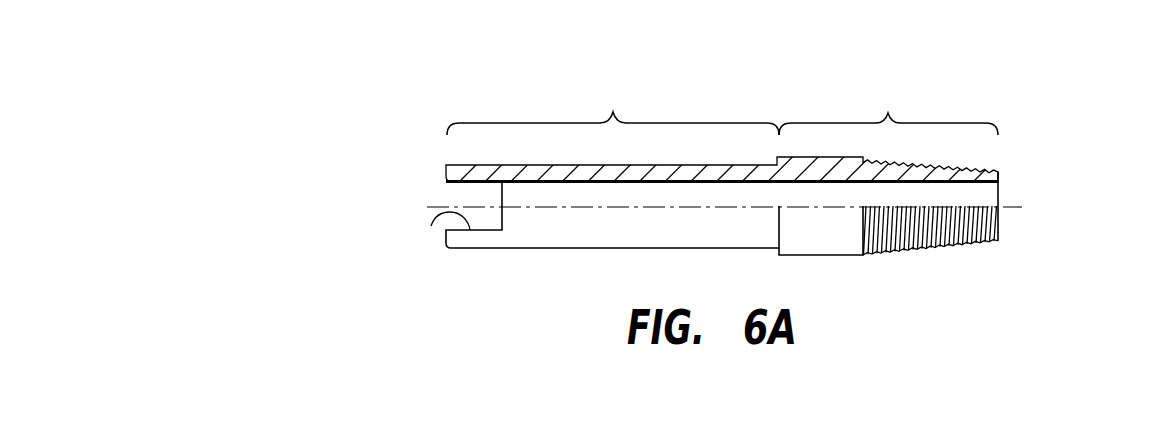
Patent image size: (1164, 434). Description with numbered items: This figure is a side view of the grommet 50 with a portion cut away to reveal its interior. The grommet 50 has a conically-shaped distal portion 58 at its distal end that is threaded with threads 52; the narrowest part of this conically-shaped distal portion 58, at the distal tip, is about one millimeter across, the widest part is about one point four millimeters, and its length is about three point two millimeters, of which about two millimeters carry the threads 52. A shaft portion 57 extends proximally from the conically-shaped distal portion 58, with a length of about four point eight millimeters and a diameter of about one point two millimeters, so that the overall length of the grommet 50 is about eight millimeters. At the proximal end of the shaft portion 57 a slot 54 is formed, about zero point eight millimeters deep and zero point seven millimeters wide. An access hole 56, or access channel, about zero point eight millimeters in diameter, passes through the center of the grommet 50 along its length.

The grommet 50 is at (682, 191).
The threads 52 is at (924, 257).
The slot 54 is at (431, 226).
The access hole 56 is at (978, 193).
The shaft portion 57 is at (613, 112).
The conically-shaped distal portion 58 is at (888, 113).